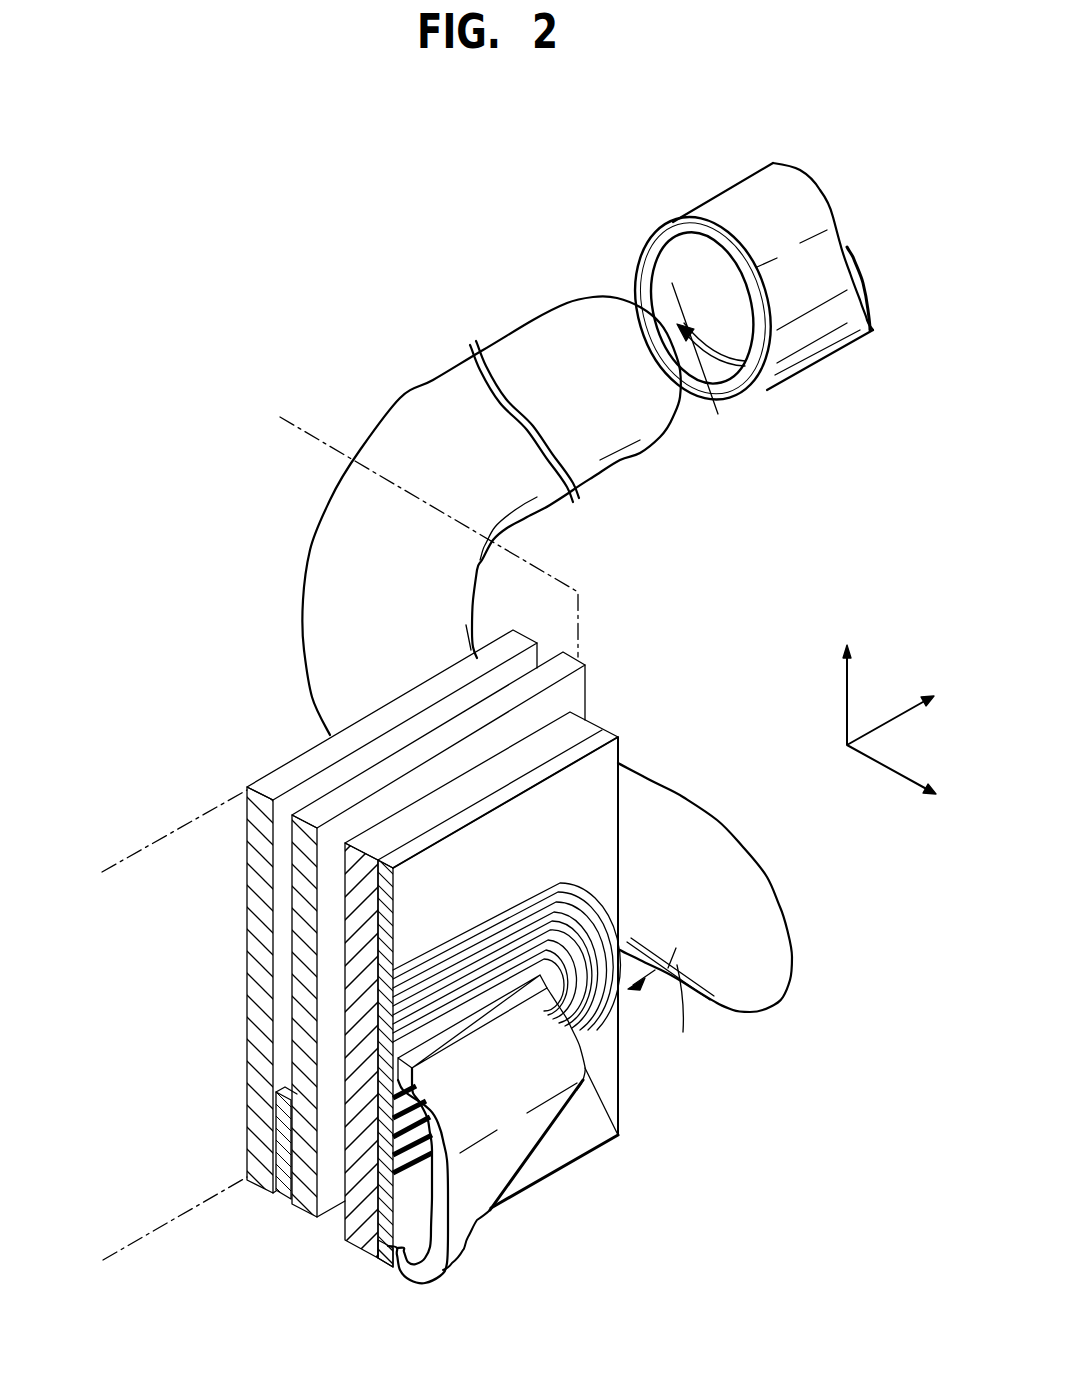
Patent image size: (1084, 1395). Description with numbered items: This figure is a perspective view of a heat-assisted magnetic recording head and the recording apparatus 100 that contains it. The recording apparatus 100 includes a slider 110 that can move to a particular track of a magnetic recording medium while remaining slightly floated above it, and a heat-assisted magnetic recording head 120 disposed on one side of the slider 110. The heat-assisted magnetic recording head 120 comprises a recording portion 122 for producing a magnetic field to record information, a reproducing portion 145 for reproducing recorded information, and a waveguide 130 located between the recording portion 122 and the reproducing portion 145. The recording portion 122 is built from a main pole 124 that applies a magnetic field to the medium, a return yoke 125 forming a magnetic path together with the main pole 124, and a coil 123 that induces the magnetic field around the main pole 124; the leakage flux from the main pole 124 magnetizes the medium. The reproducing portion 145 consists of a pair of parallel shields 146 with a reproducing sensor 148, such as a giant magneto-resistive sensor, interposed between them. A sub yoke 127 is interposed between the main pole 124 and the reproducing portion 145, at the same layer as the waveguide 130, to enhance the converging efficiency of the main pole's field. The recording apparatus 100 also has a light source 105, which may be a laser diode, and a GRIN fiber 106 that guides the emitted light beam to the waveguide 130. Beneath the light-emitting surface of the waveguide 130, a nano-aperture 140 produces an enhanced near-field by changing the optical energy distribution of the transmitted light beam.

The recording apparatus 100 is at (135, 367).
The light source 105 is at (722, 210).
The GRIN fiber 106 is at (413, 422).
The slider 110 is at (567, 617).
The heat-assisted magnetic recording head 120 is at (226, 863).
The recording portion 122 is at (695, 1193).
The coil 123 is at (600, 1050).
The main pole 124 is at (560, 1153).
The return yoke 125 is at (485, 1180).
The sub yoke 127 is at (340, 1203).
The waveguide 130 is at (358, 1215).
The nano-aperture 140 is at (372, 1253).
The reproducing portion 145 is at (172, 1152).
The pair of parallel shields 146 is at (250, 1172).
The reproducing sensor 148 is at (287, 1132).